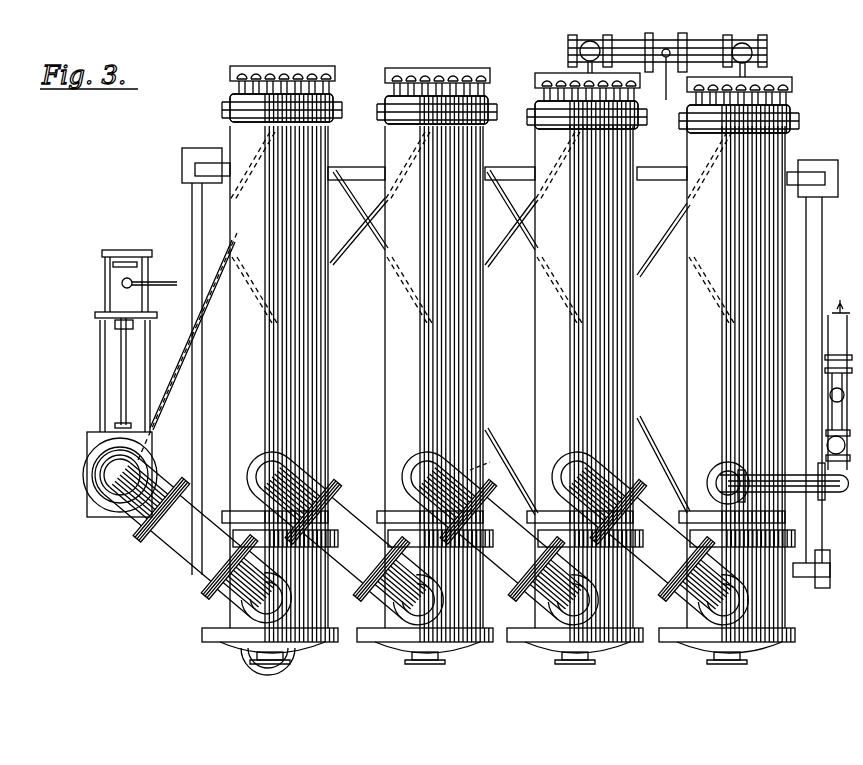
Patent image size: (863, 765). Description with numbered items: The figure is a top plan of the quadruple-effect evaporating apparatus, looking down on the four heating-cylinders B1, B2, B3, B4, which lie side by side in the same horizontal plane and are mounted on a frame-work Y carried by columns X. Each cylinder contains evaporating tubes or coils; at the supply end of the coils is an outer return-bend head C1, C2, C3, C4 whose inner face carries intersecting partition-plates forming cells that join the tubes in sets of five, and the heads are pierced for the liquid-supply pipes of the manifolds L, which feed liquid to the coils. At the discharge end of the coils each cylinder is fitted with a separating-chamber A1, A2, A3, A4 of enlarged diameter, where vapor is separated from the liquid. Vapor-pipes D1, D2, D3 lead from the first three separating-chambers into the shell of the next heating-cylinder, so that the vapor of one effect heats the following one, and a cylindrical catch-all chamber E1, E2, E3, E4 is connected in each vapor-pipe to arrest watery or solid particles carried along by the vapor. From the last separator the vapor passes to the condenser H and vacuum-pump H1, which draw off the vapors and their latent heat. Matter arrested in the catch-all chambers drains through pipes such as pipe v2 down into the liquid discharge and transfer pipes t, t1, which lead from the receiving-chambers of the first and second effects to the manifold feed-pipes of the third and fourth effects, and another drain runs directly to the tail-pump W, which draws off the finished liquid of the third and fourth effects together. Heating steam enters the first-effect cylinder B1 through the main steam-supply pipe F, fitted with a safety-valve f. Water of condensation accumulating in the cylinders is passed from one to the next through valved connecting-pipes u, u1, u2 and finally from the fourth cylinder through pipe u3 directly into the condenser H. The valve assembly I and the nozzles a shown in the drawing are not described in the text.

The manifold L is at (510, 89).
The steam supply pipe with valves I is at (667, 59).
The return-bend head C1 is at (729, 112).
The return-bend head C2 is at (574, 110).
The return-bend head C3 is at (424, 105).
The return-bend head C4 is at (271, 103).
The column X is at (512, 357).
The frame-work Y is at (508, 379).
The liquid discharge and transfer pipe t is at (587, 465).
The liquid discharge and transfer pipe t1 is at (360, 210).
The connecting-pipe u is at (663, 240).
The connecting-pipe u1 is at (511, 218).
The connecting-pipe u2 is at (359, 231).
The pipe u3 is at (187, 346).
The condenser H is at (110, 474).
The vacuum-pump H1 is at (125, 341).
The heating-cylinder B1 is at (736, 377).
The heating-cylinder B2 is at (584, 377).
The heating-cylinder B3 is at (434, 377).
The heating-cylinder B4 is at (279, 377).
The catch-all chamber E1 is at (640, 530).
The catch-all chamber E2 is at (490, 530).
The catch-all chamber E3 is at (335, 530).
The catch-all chamber E4 is at (183, 528).
The elbow D is at (726, 602).
The vapor-pipe D1 is at (575, 602).
The vapor-pipe D2 is at (421, 602).
The vapor-pipe D3 is at (268, 600).
The separating-chamber A1 is at (727, 582).
The separating-chamber A2 is at (575, 582).
The separating-chamber A3 is at (425, 582).
The separating-chamber A4 is at (270, 582).
The outlet nozzle a is at (498, 668).
The tail-pump W is at (268, 674).
The pipe v2 is at (480, 475).
The main steam-supply pipe F is at (778, 490).
The safety-valve f is at (844, 385).